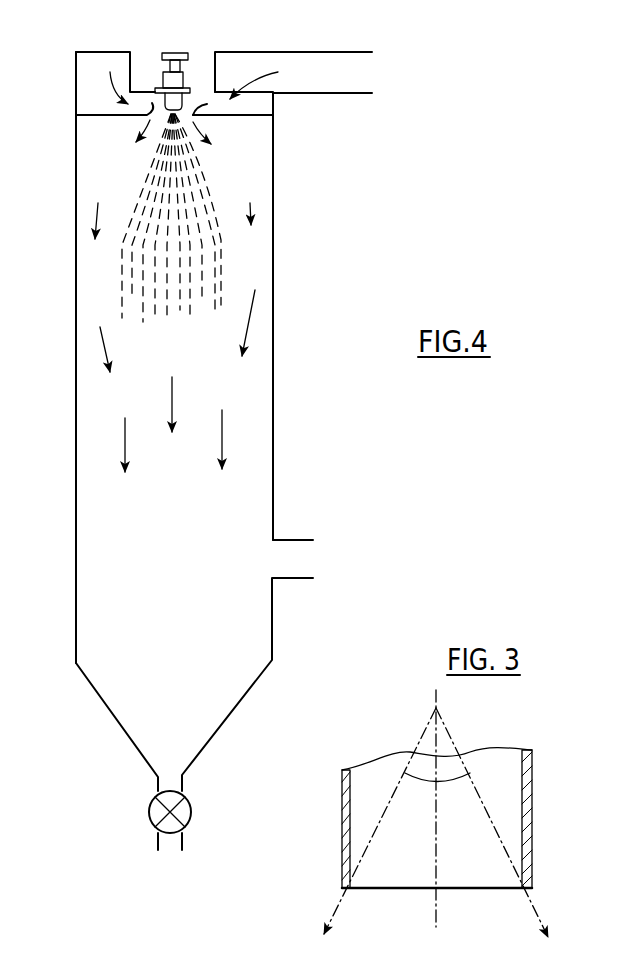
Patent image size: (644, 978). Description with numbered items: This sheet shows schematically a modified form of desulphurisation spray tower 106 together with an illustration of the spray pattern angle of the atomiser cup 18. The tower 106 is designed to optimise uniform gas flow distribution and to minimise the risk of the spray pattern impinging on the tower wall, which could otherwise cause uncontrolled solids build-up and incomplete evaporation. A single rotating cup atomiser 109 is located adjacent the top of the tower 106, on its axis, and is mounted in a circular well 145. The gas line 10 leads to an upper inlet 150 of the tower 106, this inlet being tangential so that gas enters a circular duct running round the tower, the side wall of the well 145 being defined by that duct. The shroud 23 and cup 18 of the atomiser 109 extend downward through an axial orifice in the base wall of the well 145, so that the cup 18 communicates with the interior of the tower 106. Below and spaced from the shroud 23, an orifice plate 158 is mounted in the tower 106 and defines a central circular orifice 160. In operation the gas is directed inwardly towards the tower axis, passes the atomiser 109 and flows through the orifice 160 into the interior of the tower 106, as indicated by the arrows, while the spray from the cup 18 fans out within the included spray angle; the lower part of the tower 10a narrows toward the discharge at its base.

In FIG. 4, the line 10 is at (320, 95).
In FIG. 4, the lower housing section with hopper 10a is at (290, 578).
In FIG. 4, the tower 106 is at (273, 320).
In FIG. 4, the circular well 145 is at (148, 33).
In FIG. 4, the upper inlet 150 is at (272, 52).
In FIG. 4, the rotating cup atomiser 109 is at (188, 53).
In FIG. 4, the orifice plate 158 is at (92, 116).
In FIG. 4, the central circular orifice 160 is at (150, 126).
In FIG. 4, the shroud 23 is at (197, 117).
In FIG. 3, the cup 18 is at (532, 750).